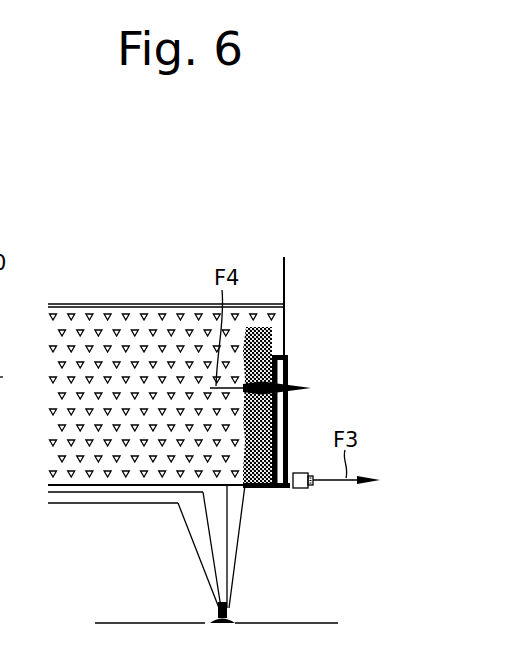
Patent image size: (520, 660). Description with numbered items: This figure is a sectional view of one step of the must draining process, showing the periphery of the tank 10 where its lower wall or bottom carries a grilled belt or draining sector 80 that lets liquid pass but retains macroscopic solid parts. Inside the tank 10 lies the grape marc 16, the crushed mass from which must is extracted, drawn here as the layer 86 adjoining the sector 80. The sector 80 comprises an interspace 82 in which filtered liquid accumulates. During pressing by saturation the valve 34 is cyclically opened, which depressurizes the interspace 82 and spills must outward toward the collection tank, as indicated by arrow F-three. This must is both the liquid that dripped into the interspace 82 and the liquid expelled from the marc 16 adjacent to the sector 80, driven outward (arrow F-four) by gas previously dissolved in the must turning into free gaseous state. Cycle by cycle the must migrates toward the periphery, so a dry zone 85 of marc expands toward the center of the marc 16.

The tank 10 is at (286, 265).
The marc 16 is at (58, 409).
The valve 34 is at (301, 489).
The draining sector 80 is at (289, 363).
The interspace 82 is at (287, 466).
The dry zone of marc 85 is at (284, 338).
The panel 86 is at (138, 298).